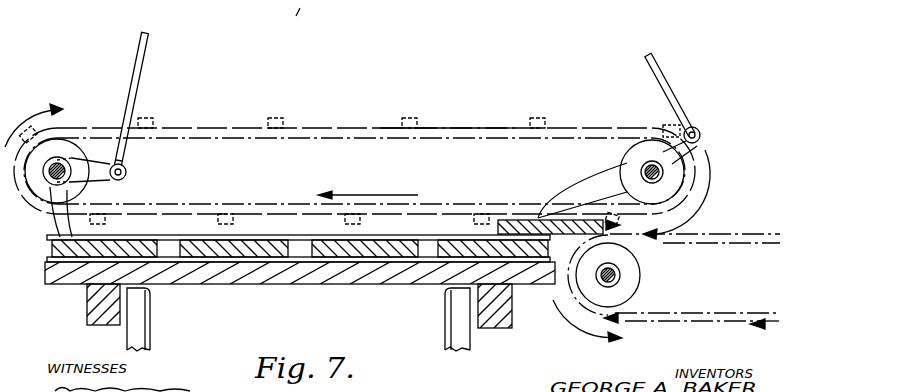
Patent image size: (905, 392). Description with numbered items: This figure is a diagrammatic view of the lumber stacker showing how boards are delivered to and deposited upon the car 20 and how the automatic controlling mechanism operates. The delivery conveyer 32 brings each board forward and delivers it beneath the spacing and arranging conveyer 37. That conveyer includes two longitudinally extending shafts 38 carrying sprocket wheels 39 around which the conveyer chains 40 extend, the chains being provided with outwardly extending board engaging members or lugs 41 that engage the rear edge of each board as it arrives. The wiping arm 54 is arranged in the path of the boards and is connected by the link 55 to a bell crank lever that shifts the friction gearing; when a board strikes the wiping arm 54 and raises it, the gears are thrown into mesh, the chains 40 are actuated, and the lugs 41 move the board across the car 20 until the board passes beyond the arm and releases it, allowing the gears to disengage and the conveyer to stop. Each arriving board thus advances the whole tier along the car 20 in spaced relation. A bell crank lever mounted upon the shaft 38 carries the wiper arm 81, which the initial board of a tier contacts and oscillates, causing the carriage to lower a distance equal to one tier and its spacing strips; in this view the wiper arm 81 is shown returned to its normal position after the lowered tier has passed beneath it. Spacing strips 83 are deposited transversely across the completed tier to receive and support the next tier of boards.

The car 20 is at (340, 278).
The delivery conveyer 32 is at (727, 231).
The spacing and arranging conveyer 37 is at (327, 130).
The shaft 38 is at (60, 165).
The sprocket wheel 39 is at (638, 152).
The conveyer chain 40 is at (457, 130).
The board engaging member 41 is at (545, 123).
The wiping arm 54 is at (561, 201).
The link 55 is at (677, 94).
The wiper arm 81 is at (53, 224).
The spacing strip 83 is at (427, 240).